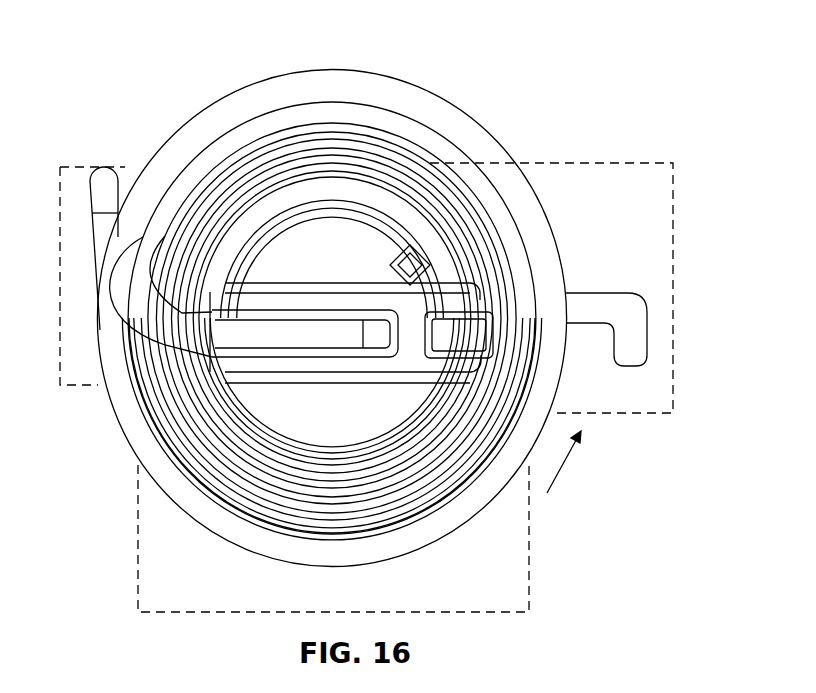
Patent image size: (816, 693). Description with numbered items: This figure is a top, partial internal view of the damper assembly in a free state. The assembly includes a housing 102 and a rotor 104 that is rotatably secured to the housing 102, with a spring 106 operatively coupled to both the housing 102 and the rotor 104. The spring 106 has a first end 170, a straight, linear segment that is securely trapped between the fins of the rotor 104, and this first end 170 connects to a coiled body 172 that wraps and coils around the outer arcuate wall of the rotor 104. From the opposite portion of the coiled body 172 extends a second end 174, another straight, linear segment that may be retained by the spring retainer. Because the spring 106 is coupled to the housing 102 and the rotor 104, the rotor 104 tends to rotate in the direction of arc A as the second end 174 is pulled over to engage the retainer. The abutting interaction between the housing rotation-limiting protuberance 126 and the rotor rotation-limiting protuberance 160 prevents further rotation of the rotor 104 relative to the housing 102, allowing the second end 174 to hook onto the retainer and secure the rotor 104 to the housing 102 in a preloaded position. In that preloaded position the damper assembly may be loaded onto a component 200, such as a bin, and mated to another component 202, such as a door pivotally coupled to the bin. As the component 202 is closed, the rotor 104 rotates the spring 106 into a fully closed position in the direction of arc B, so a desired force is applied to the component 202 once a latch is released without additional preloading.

The housing 102 is at (430, 283).
The rotor 104 is at (307, 186).
The spring 106 is at (530, 203).
The housing rotation-limiting protuberance 126 is at (488, 200).
The rotor rotation-limiting protuberance 160 is at (412, 258).
The first end 170 is at (270, 333).
The coiled body 172 is at (453, 537).
The second end 174 is at (102, 167).
The component 200 is at (530, 553).
The component 202 is at (637, 413).
The arc A is at (380, 72).
The arc B is at (567, 470).